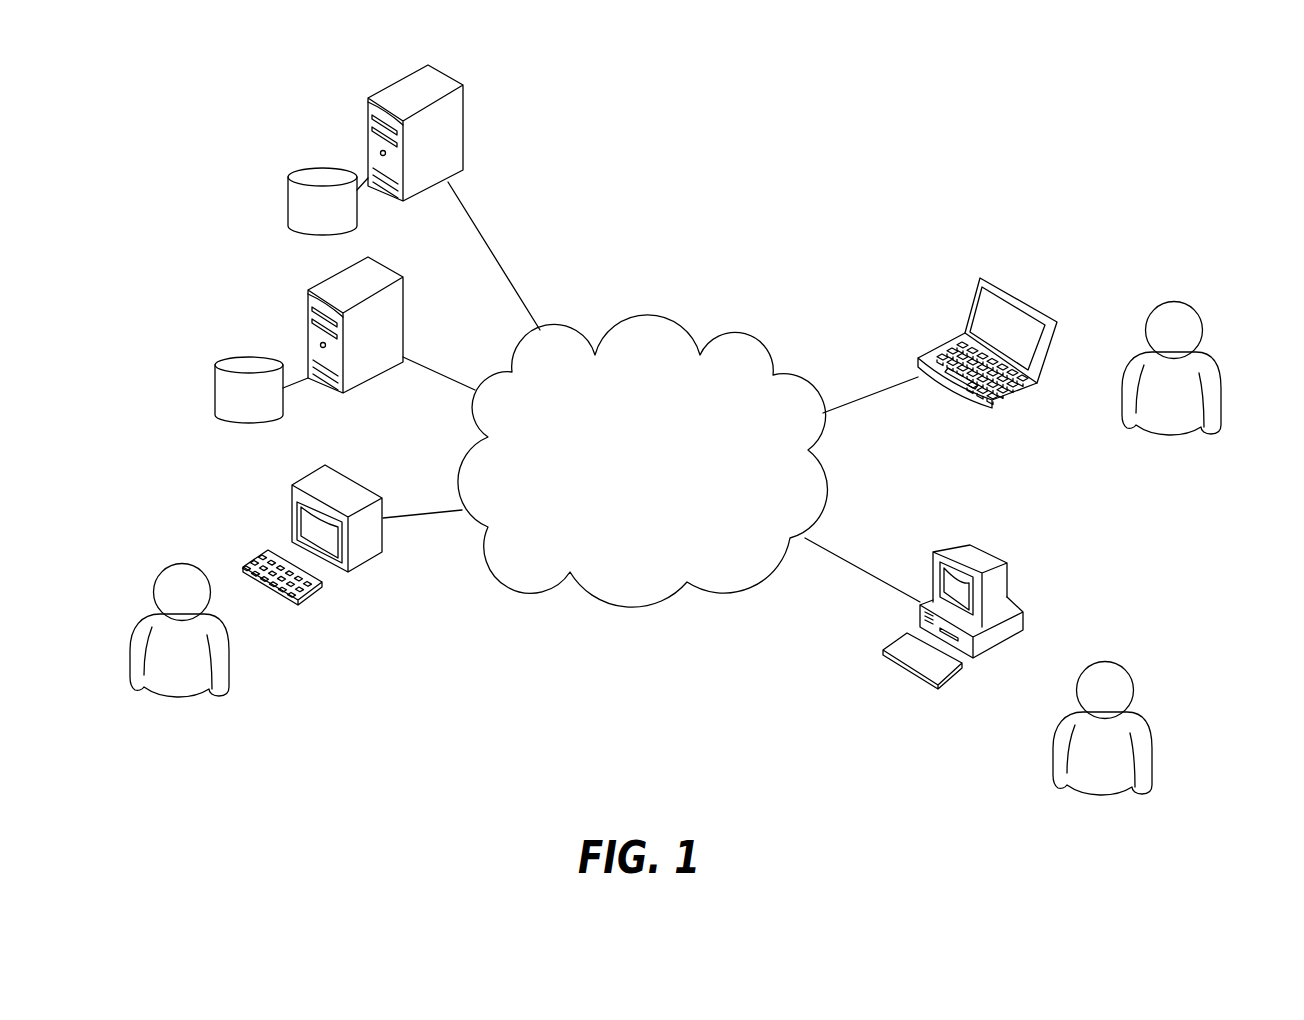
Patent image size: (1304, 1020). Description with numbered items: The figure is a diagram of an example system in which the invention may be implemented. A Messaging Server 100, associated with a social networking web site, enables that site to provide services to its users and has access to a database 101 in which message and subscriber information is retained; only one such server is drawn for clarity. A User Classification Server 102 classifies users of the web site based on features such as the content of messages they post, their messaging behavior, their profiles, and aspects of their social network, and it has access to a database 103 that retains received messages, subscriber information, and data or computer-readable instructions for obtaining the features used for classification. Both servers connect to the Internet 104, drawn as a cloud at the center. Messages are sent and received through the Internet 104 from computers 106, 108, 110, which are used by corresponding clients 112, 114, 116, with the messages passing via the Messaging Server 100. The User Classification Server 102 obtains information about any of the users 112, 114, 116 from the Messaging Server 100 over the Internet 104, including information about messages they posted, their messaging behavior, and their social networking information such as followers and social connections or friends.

The Messaging Server 100 is at (404, 305).
The database 101 is at (261, 390).
The User Classification Server 102 is at (465, 130).
The database 103 is at (328, 201).
The Internet 104 is at (664, 484).
The computer 106 is at (347, 477).
The computer 108 is at (1012, 292).
The computer 110 is at (1000, 568).
The client 112 is at (197, 563).
The client 114 is at (1200, 327).
The client 116 is at (1135, 673).